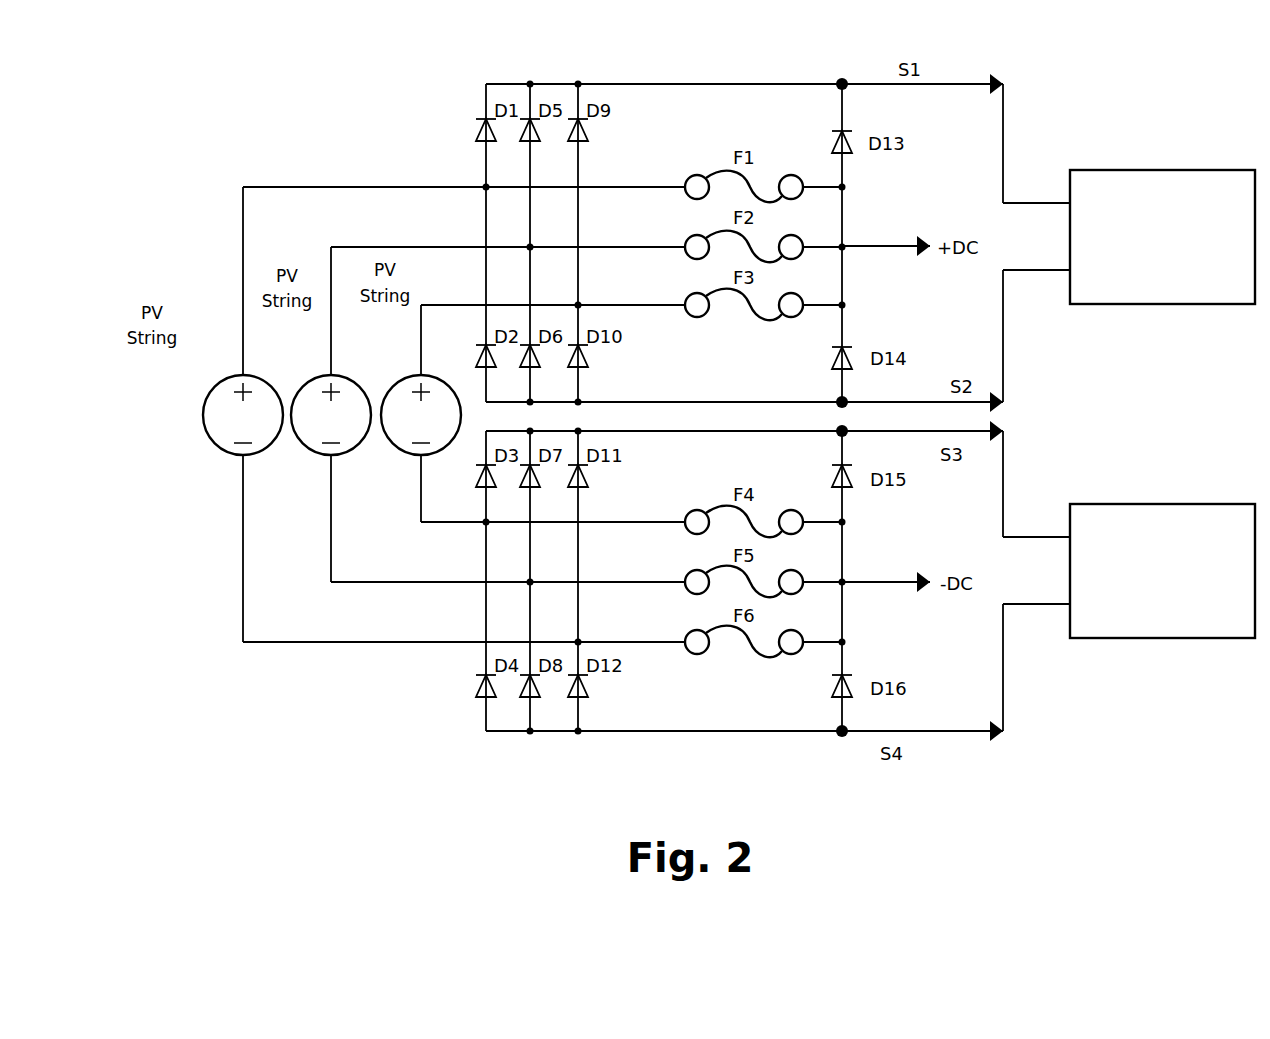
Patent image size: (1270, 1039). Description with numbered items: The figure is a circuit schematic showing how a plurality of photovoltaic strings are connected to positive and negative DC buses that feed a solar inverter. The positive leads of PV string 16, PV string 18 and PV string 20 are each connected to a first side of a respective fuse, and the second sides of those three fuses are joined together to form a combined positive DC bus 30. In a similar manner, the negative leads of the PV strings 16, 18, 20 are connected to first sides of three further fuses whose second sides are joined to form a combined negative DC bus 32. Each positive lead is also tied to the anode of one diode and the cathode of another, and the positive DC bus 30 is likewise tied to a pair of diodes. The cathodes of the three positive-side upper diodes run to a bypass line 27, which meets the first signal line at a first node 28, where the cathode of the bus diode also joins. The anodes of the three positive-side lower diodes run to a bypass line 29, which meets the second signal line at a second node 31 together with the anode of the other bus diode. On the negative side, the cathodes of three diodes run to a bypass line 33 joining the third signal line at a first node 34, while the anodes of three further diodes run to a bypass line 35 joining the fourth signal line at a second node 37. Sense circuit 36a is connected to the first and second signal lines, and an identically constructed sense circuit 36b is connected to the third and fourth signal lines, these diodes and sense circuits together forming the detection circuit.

The PV string 16 is at (203, 418).
The PV string 18 is at (316, 380).
The PV string 20 is at (406, 380).
The bypass line 27 is at (718, 83).
The first node 28 is at (841, 80).
The bypass line 29 is at (741, 401).
The positive DC bus 30 is at (870, 243).
The second node 31 is at (838, 401).
The negative DC bus 32 is at (870, 580).
The bypass line 33 is at (686, 433).
The first node 34 is at (839, 433).
The bypass line 35 is at (706, 733).
The sense circuit 36a is at (1162, 237).
The sense circuit 36b is at (1162, 571).
The second node 37 is at (842, 737).